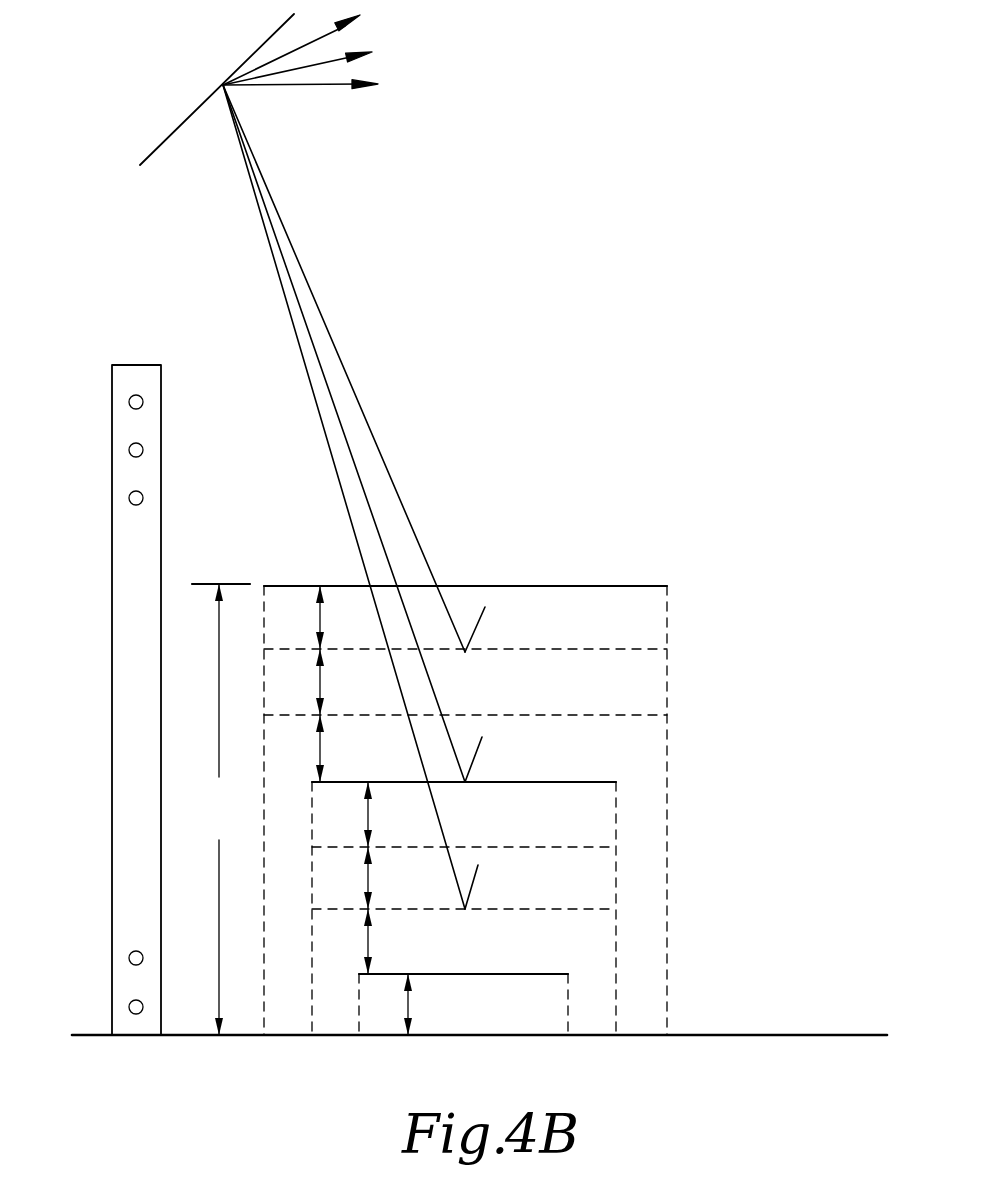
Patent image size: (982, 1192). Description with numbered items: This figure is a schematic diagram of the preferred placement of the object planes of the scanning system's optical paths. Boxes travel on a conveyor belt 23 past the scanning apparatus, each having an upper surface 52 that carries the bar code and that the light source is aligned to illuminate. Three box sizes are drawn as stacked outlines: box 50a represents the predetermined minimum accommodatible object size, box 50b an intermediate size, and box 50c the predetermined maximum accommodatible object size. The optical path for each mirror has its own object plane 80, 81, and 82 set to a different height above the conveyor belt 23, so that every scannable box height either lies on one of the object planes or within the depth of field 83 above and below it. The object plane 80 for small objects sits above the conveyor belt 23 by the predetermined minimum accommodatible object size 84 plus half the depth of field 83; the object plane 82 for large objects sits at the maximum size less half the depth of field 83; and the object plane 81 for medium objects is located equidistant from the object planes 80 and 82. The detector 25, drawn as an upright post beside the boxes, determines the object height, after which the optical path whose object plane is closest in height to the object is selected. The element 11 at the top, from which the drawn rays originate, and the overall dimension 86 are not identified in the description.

The laser scanner / light source 11 is at (253, 52).
The conveyor belt 23 is at (805, 1035).
The detector 25 is at (112, 698).
The upper surface 52 is at (548, 588).
The box of minimum accommodatible object size 50a is at (543, 974).
The intermediate size box 50b is at (592, 782).
The box of maximum accommodatible object size 50c is at (637, 588).
The object plane 80 is at (465, 909).
The object plane 81 is at (465, 782).
The object plane 82 is at (465, 652).
The depth of field 83 is at (325, 780).
The predetermined minimum accommodatible object size 84 is at (390, 1004).
The total height 86 is at (221, 809).